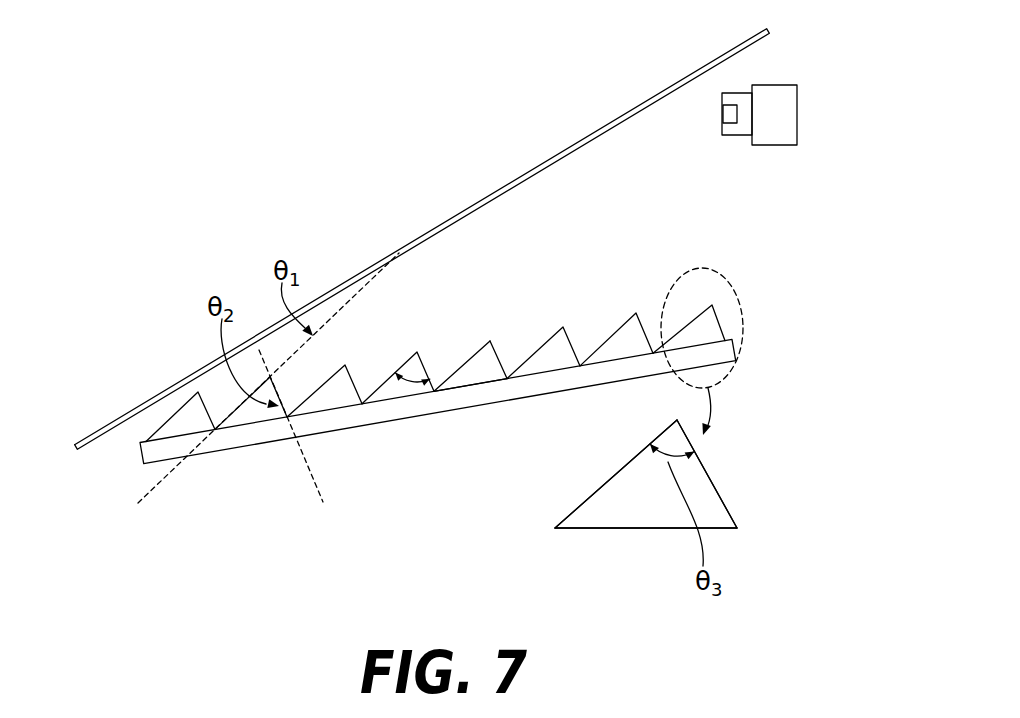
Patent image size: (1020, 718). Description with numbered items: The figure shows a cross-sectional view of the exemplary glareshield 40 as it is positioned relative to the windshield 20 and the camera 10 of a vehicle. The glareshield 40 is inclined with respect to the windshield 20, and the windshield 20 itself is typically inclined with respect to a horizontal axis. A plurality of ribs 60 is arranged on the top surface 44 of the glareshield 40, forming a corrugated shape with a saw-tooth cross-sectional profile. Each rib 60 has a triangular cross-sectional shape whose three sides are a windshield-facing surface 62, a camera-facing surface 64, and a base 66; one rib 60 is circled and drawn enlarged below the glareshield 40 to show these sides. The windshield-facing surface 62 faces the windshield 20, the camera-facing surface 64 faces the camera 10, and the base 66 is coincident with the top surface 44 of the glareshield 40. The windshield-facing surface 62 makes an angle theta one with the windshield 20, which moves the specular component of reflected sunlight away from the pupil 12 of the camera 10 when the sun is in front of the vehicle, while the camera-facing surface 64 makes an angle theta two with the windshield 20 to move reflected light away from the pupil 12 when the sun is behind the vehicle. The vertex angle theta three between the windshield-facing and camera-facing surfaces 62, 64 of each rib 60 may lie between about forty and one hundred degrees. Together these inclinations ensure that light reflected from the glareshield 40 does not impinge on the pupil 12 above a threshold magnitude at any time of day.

The camera 10 is at (806, 114).
The pupil 12 is at (729, 124).
The windshield 20 is at (88, 440).
The glareshield 40 is at (140, 453).
The top surface 44 is at (582, 292).
The rib 60 is at (632, 342).
The windshield-facing surface 62 is at (468, 360).
The camera-facing surface 64 is at (504, 350).
The base 66 is at (477, 385).